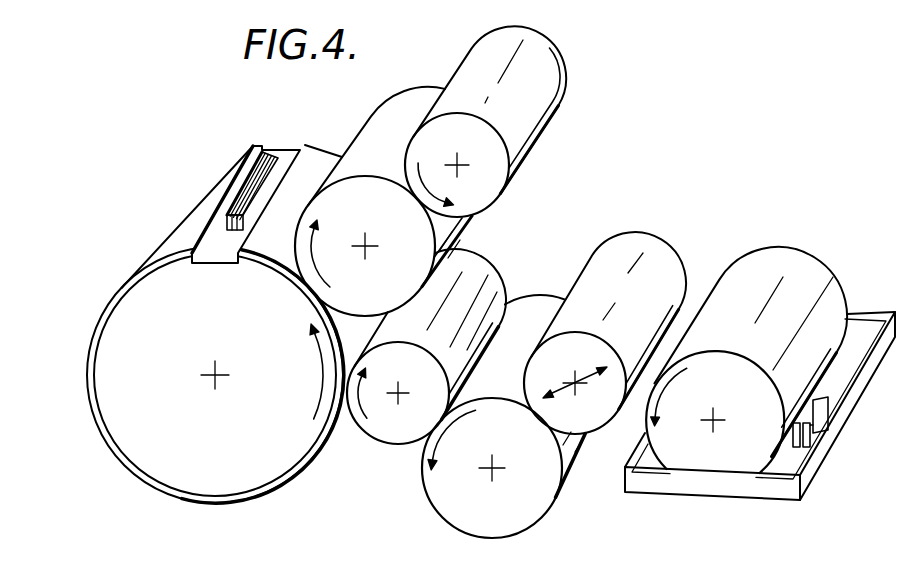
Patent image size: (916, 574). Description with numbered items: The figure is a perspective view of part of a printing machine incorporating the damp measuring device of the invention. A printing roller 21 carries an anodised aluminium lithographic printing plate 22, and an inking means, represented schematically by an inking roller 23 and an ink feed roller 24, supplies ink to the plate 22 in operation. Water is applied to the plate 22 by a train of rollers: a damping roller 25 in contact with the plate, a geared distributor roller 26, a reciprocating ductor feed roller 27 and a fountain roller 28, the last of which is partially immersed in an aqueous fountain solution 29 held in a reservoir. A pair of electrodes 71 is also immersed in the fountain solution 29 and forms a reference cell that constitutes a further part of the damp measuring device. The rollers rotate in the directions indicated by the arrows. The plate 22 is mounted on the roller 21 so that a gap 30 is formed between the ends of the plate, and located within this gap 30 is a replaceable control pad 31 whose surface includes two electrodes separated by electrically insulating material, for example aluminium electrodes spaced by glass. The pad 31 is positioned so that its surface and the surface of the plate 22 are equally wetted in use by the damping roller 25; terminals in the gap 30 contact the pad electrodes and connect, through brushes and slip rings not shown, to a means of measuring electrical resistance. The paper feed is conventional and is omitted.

The printing roller 21 is at (192, 465).
The lithographic printing plate 22 is at (100, 433).
The inking roller 23 is at (382, 110).
The ink feed roller 24 is at (533, 62).
The damping roller 25 is at (484, 270).
The geared distributor roller 26 is at (556, 280).
The reciprocating ductor feed roller 27 is at (628, 258).
The fountain roller 28 is at (753, 263).
The aqueous fountain solution 29 is at (853, 333).
The gap 30 is at (215, 253).
The control pad 31 is at (280, 136).
The pair of electrodes 71 is at (817, 423).